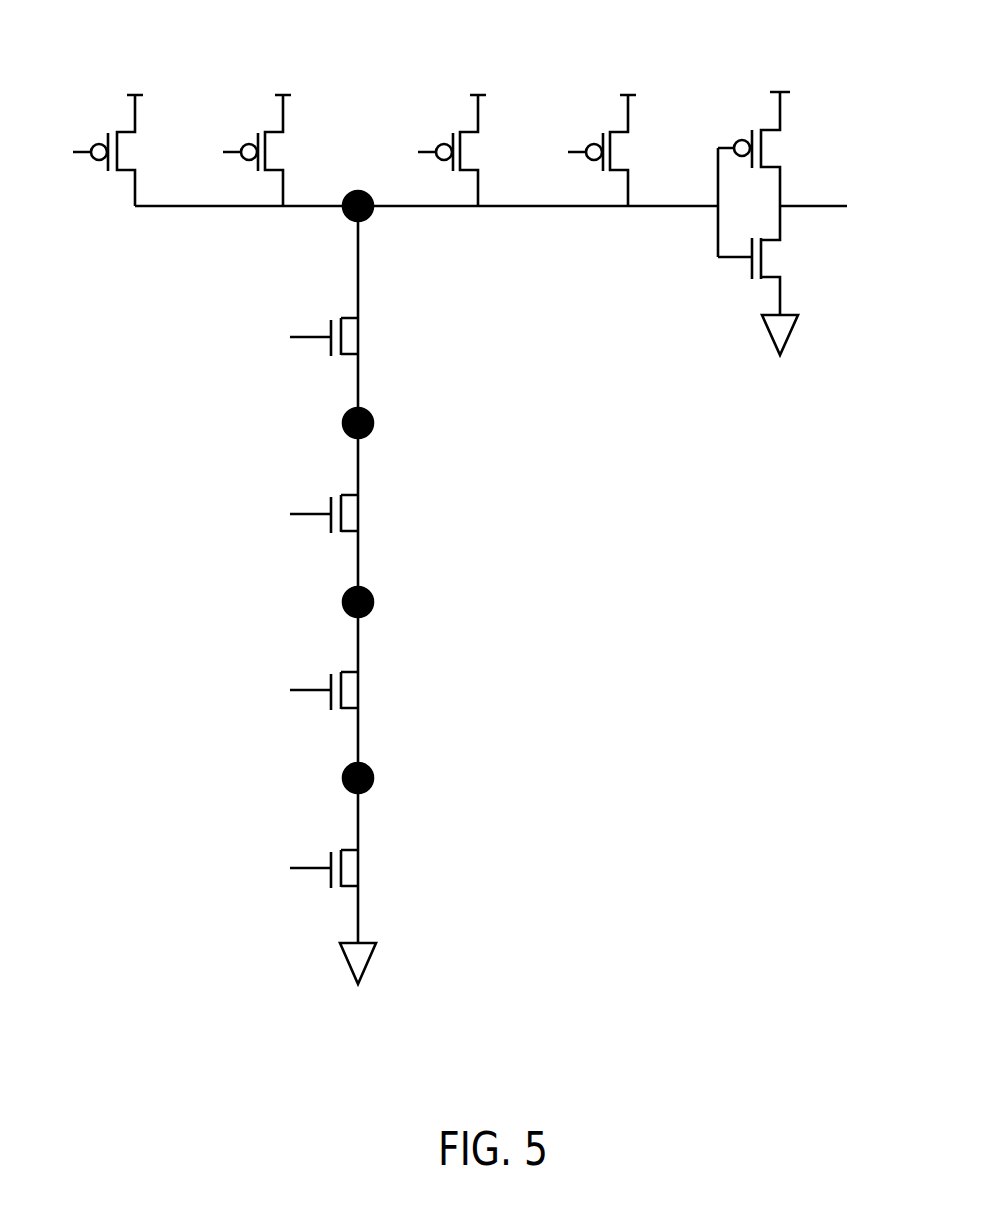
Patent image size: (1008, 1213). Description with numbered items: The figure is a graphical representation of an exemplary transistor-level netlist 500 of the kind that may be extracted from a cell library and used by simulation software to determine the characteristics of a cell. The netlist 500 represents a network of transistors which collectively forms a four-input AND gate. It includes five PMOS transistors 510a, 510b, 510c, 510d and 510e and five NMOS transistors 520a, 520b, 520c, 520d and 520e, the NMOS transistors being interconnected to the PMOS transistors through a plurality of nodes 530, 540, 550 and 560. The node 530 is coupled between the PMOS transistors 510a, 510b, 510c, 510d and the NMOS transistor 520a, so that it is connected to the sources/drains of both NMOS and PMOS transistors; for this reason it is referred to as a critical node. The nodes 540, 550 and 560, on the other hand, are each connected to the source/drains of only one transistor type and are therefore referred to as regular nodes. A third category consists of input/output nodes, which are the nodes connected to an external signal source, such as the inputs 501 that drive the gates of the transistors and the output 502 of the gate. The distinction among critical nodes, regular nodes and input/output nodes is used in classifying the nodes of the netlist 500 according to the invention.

The netlist 500 is at (773, 573).
The inputs 501 is at (85, 148).
The output 502 is at (810, 200).
The PMOS transistor 510a is at (138, 117).
The PMOS transistor 510b is at (288, 117).
The PMOS transistor 510c is at (481, 117).
The PMOS transistor 510d is at (631, 117).
The PMOS transistor 510e is at (782, 115).
The NMOS transistor 520a is at (342, 317).
The NMOS transistor 520b is at (342, 492).
The NMOS transistor 520c is at (343, 668).
The NMOS transistor 520d is at (343, 847).
The NMOS transistor 520e is at (781, 278).
The node 530 is at (368, 218).
The node 540 is at (368, 438).
The node 550 is at (370, 615).
The node 560 is at (370, 790).